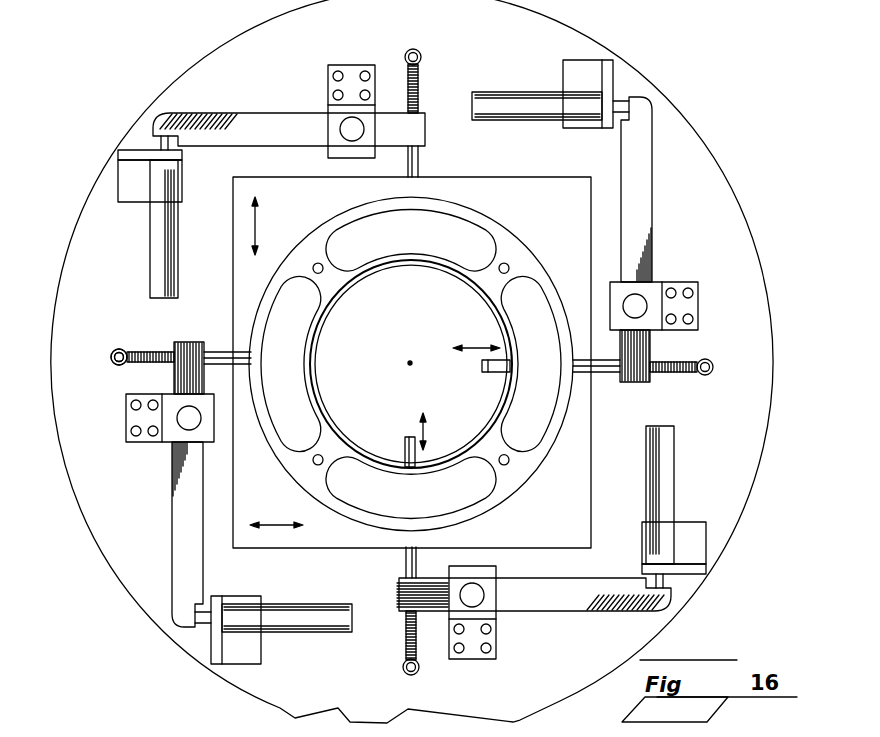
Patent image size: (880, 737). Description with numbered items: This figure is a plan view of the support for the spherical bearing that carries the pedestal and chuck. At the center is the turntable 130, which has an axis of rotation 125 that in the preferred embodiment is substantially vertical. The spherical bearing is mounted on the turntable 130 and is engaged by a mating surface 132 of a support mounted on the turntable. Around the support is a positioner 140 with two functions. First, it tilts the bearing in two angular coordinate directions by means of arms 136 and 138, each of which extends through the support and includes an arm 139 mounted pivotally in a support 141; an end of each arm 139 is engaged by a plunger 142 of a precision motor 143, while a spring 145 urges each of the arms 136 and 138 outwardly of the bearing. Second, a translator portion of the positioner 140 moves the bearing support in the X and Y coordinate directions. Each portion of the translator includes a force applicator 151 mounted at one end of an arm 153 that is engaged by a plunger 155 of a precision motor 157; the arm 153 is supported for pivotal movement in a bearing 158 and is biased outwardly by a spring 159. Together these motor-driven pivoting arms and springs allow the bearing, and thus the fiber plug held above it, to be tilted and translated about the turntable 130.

The axis of rotation 125 is at (409, 361).
The turntable 130 is at (703, 162).
The mating surface 132 is at (508, 252).
The arm 136 is at (405, 440).
The arm 138 is at (490, 371).
The arm 139 is at (643, 192).
The positioner 140 is at (677, 141).
The support 141 is at (675, 282).
The plunger 142 is at (622, 98).
The precision motor 143 is at (530, 97).
The spring 145 is at (678, 372).
The force applicator 151 is at (418, 172).
The arm 153 is at (228, 112).
The plunger 155 is at (202, 603).
The precision motor 157 is at (153, 245).
The bearing 158 is at (138, 447).
The spring 159 is at (153, 352).